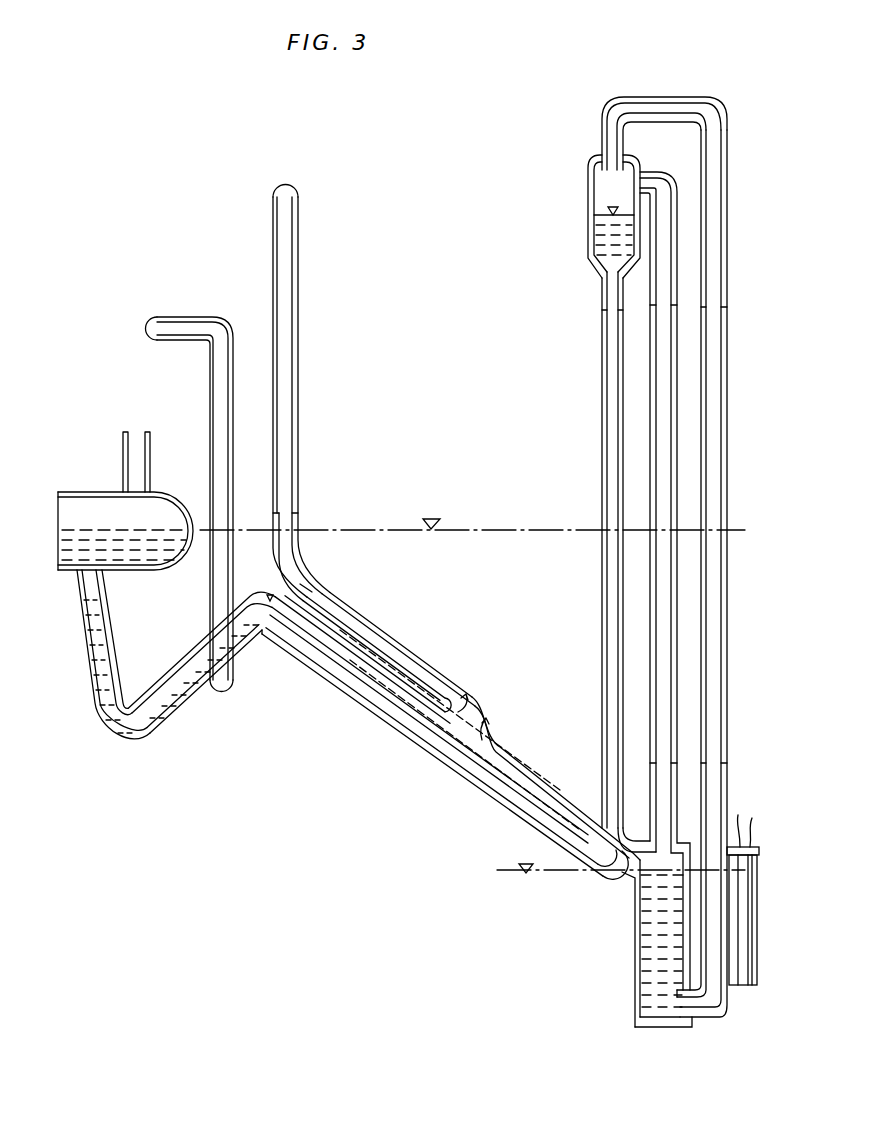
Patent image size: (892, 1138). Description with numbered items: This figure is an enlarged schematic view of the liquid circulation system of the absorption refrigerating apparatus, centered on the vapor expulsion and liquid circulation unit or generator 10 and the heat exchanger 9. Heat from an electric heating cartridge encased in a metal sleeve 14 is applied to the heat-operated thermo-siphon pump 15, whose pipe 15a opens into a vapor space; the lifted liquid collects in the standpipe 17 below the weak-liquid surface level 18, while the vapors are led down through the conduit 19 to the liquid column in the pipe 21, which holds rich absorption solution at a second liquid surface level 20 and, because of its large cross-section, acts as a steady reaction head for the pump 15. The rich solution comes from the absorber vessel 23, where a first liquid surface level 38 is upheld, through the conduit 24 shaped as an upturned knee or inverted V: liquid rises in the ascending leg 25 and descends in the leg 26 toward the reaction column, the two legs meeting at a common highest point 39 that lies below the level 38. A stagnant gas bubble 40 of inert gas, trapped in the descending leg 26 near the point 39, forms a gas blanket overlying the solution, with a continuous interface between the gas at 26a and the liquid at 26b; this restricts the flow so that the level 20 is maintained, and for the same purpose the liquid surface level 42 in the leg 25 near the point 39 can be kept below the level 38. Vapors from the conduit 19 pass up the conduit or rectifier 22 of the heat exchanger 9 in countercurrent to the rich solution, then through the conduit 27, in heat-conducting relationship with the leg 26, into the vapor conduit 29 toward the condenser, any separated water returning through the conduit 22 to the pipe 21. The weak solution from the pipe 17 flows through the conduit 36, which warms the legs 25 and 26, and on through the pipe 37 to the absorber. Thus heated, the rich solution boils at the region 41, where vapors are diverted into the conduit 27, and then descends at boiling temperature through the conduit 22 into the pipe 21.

The heat exchanger 9 is at (440, 714).
The vapor expulsion and liquid circulation unit 10 is at (674, 566).
The metal sleeve 14 is at (758, 988).
The thermo-siphon pump 15 is at (722, 576).
The pipe 15a is at (720, 166).
The pipe 17 is at (608, 393).
The liquid surface level 18 is at (605, 209).
The conduit 19 is at (668, 472).
The liquid surface level 20 is at (519, 866).
The pipe 21 is at (633, 980).
The conduit 22 is at (532, 770).
The absorber vessel 23 is at (70, 570).
The conduit 24 is at (92, 672).
The leg 25 is at (178, 668).
The leg 26 is at (405, 684).
The gas 26a is at (335, 655).
The liquid 26b is at (370, 656).
The conduit 27 is at (358, 617).
The vapor conduit 29 is at (298, 350).
The conduit 36 is at (362, 700).
The pipe 37 is at (226, 484).
The liquid surface level 38 is at (440, 520).
The highest point 39 is at (266, 586).
The gas bubble 40 is at (264, 647).
The region 41 is at (440, 712).
The liquid surface level 42 is at (302, 590).